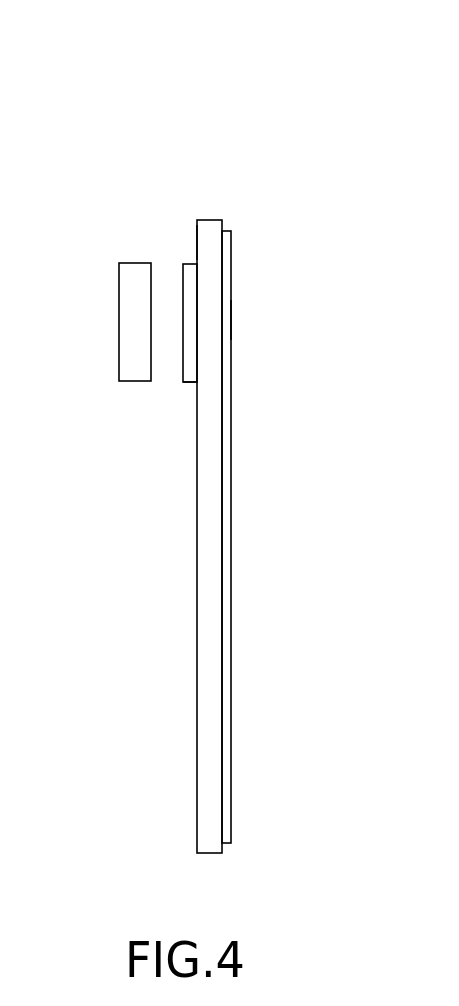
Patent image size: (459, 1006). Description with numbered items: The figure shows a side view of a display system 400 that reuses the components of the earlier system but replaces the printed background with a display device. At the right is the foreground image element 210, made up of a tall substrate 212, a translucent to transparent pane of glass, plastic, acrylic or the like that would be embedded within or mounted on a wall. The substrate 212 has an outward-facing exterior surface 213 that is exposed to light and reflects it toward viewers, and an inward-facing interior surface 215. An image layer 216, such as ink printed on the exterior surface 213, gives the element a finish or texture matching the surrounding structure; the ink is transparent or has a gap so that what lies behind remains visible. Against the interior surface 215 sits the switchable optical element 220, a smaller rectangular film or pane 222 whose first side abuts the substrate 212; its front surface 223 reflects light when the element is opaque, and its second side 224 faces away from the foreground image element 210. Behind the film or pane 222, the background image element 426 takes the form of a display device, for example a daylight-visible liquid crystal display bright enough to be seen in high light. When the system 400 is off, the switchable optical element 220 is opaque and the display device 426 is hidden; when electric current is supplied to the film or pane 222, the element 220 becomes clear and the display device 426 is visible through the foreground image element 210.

The display system 400 is at (260, 83).
The foreground image element 210 is at (232, 201).
The substrate 212 is at (204, 220).
The exterior surface 213 is at (225, 232).
The interior surface 215 is at (196, 230).
The image layer 216 is at (231, 318).
The film or pane 222 is at (184, 265).
The front surface 223 is at (198, 372).
The second side 224 is at (183, 384).
The switchable optical element 220 is at (170, 416).
The background image element 426 is at (104, 288).